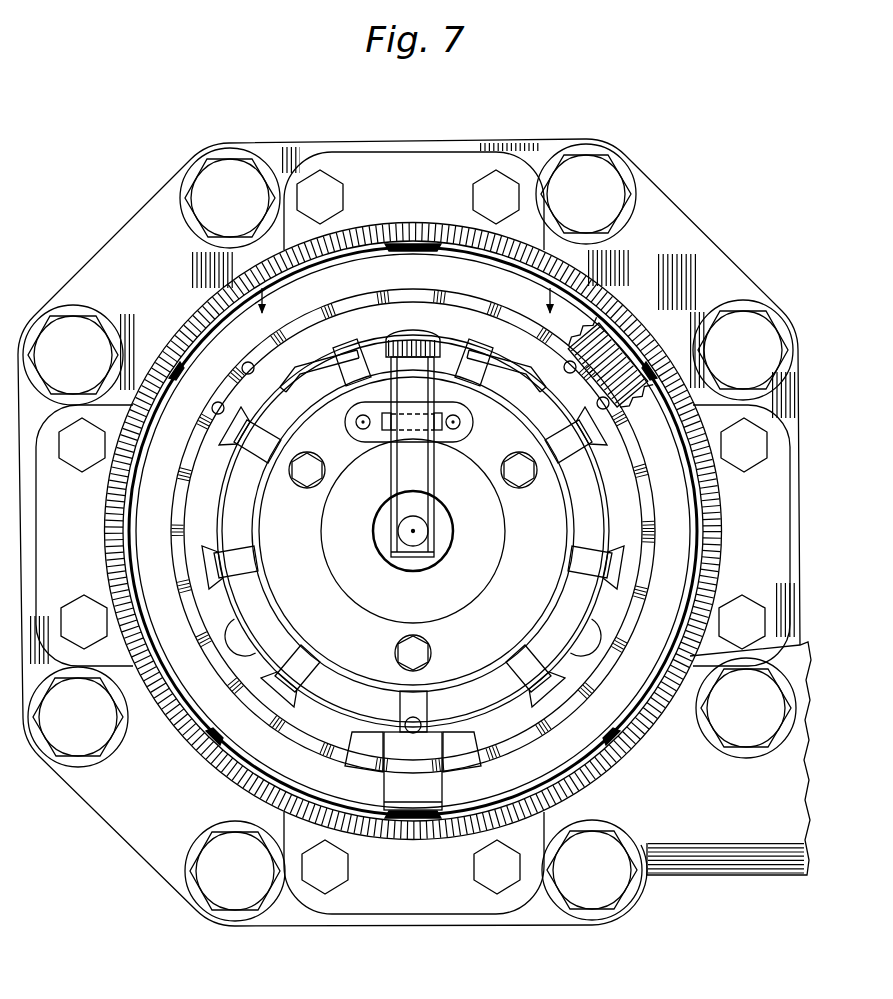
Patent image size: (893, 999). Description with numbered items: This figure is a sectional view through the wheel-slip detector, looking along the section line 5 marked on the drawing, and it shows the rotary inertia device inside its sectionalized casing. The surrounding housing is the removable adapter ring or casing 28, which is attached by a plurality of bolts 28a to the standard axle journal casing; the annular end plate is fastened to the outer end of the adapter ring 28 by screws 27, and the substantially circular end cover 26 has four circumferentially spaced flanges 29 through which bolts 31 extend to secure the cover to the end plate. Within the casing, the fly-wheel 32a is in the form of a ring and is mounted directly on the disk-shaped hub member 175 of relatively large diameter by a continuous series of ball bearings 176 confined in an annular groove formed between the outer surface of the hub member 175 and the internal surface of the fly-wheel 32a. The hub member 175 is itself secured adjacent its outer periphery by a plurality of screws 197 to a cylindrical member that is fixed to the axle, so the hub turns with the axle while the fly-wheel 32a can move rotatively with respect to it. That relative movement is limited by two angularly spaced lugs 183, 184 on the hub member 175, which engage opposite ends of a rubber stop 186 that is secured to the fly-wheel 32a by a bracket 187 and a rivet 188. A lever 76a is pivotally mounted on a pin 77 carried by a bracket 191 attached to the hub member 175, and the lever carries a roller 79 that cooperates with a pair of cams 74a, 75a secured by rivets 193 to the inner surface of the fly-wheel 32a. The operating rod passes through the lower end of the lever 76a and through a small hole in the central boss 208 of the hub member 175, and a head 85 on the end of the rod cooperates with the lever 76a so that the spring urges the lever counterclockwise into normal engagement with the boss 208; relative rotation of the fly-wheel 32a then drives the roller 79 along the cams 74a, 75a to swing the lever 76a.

The section line 5- 5 is at (404, 313).
The end cover 26 is at (620, 762).
The screws 27 is at (155, 366).
The adapter ring 28 is at (162, 239).
The bolts 28a is at (218, 217).
The flanges 29 is at (388, 165).
The bolts 31 is at (486, 196).
The fly-wheel 32a is at (236, 729).
The cam 74a is at (318, 373).
The cam 75a is at (500, 373).
The lever 76a is at (436, 482).
The pin 77 is at (378, 432).
The roller 79 is at (430, 346).
The head 85 is at (408, 535).
The hub member 175 is at (250, 678).
The ball bearings 176 is at (383, 294).
The lug 183 is at (237, 640).
The lug 184 is at (560, 612).
The rubber stop 186 is at (462, 746).
The bracket 187 is at (432, 788).
The rivet 188 is at (407, 723).
The bracket 191 is at (356, 423).
The rivets 193 is at (248, 375).
The screws 197 is at (309, 480).
The central boss 208 is at (412, 562).